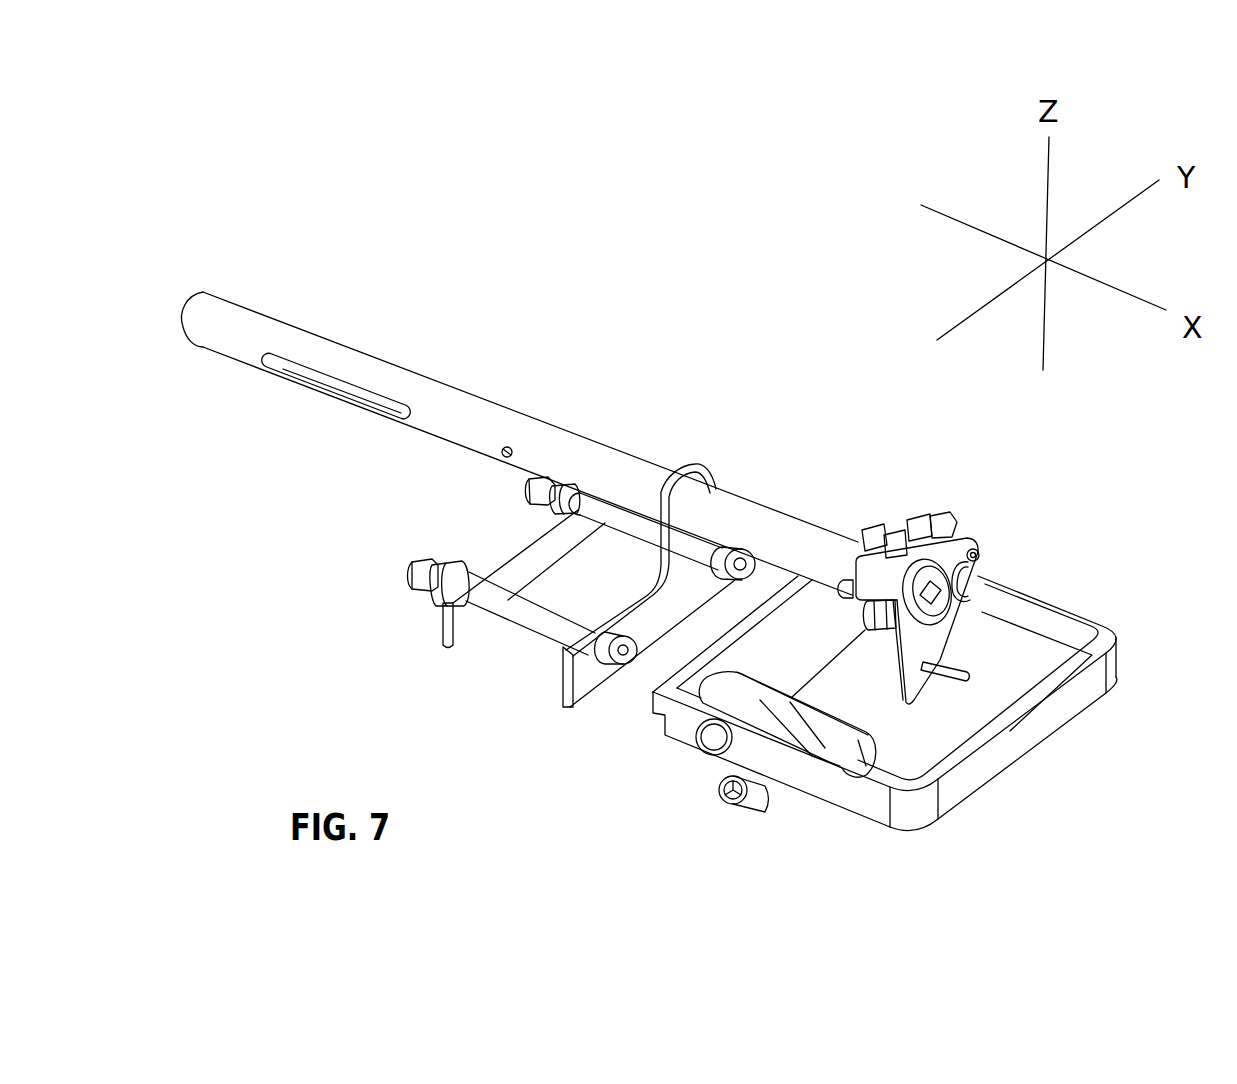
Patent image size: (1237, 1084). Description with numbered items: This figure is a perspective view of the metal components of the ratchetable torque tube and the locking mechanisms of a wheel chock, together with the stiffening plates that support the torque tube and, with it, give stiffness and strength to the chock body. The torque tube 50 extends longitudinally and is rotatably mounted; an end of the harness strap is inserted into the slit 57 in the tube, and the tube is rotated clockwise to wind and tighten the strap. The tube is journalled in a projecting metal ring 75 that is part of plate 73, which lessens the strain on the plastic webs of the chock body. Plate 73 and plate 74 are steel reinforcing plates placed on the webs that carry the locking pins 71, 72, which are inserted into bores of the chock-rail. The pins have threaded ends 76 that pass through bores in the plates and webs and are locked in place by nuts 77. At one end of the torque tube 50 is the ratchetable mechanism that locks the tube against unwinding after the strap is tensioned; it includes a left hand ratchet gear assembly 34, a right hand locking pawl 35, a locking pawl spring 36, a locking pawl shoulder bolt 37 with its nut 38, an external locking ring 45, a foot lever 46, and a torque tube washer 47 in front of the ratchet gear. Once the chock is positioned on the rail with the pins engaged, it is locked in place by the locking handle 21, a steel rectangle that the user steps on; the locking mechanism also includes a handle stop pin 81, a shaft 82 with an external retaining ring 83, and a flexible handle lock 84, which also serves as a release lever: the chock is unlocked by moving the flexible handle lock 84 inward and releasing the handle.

The locking handle 21 is at (953, 800).
The left hand ratchet gear assembly 34 is at (907, 533).
The right hand locking pawl 35 is at (943, 668).
The locking pawl spring 36 is at (973, 583).
The locking pawl shoulder bolt 37 is at (975, 538).
The nut 38 is at (917, 528).
The external locking ring 45 is at (917, 627).
The foot lever 46 is at (860, 537).
The torque tube washer 47 is at (885, 633).
The torque tube 50 is at (457, 403).
The slit 57 is at (308, 380).
The locking pin 71 is at (513, 613).
The locking pin 72 is at (620, 517).
The plate 73 is at (567, 680).
The plate 74 is at (443, 637).
The projecting metal ring 75 is at (683, 470).
The threaded end 76 is at (537, 487).
The nut 77 is at (560, 500).
The handle stop pin 81 is at (720, 795).
The shaft 82 is at (708, 740).
The external retaining ring 83 is at (707, 758).
The flexible handle lock 84 is at (847, 740).